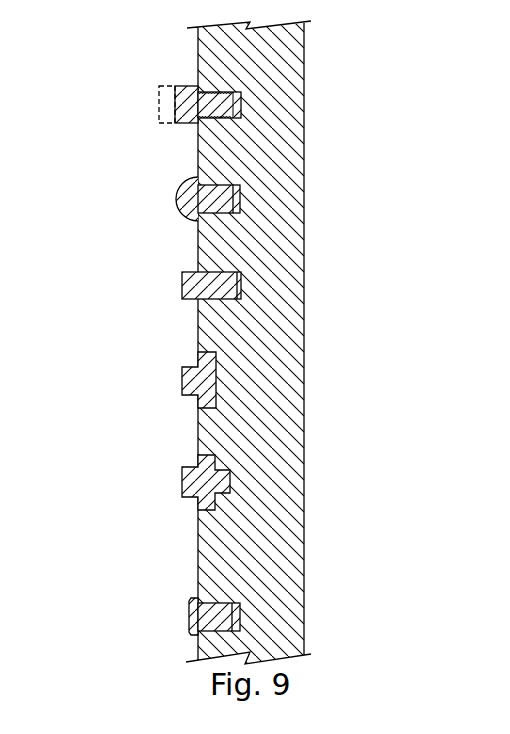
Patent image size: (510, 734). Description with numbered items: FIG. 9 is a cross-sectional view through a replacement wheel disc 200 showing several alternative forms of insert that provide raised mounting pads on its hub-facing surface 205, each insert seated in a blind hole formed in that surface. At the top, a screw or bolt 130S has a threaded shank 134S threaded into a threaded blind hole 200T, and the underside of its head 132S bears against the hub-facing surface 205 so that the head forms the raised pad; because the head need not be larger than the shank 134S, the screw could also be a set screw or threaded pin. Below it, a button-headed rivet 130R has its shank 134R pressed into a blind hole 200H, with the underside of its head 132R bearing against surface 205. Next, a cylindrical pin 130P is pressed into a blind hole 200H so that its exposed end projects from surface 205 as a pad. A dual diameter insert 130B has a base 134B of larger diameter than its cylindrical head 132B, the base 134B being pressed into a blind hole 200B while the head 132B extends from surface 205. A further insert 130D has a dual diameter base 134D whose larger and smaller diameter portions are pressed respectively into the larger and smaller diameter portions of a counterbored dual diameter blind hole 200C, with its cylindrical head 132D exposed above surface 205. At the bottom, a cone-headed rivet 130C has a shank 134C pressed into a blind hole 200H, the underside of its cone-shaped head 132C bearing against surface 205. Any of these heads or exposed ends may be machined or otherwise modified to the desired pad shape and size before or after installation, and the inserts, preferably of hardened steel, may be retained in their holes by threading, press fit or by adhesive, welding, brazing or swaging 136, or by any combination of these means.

The wheel disc 200 is at (305, 325).
The screw or bolt 130S is at (229, 92).
The head of screw 132S is at (178, 87).
The shank of screw 134S is at (243, 97).
The threaded blind hole 200T is at (244, 102).
The rivet 130R is at (220, 187).
The head of rivet 132R is at (179, 181).
The rivet shank 134R is at (243, 193).
The blind hole 200H is at (243, 195).
The pin 130P is at (179, 286).
The adhesive, welding, brazing or swaging 136 is at (197, 271).
The dual diameter insert 130B is at (127, 382).
The cylindrical head of dual diameter insert 132B is at (182, 373).
The base of dual diameter insert 134B is at (197, 357).
The blind hole 200B is at (217, 372).
The insert with dual diameter base 130D is at (137, 510).
The cylindrical head of insert 132D is at (182, 470).
The dual diameter base 134D is at (197, 508).
The counterbored dual diameter blind hole 200C is at (231, 492).
The hub-facing surface 205 is at (197, 568).
The cone-headed rivet 130C is at (203, 635).
The cone-shaped head of rivet 132C is at (189, 602).
The shank of cone-headed rivet 134C is at (242, 620).